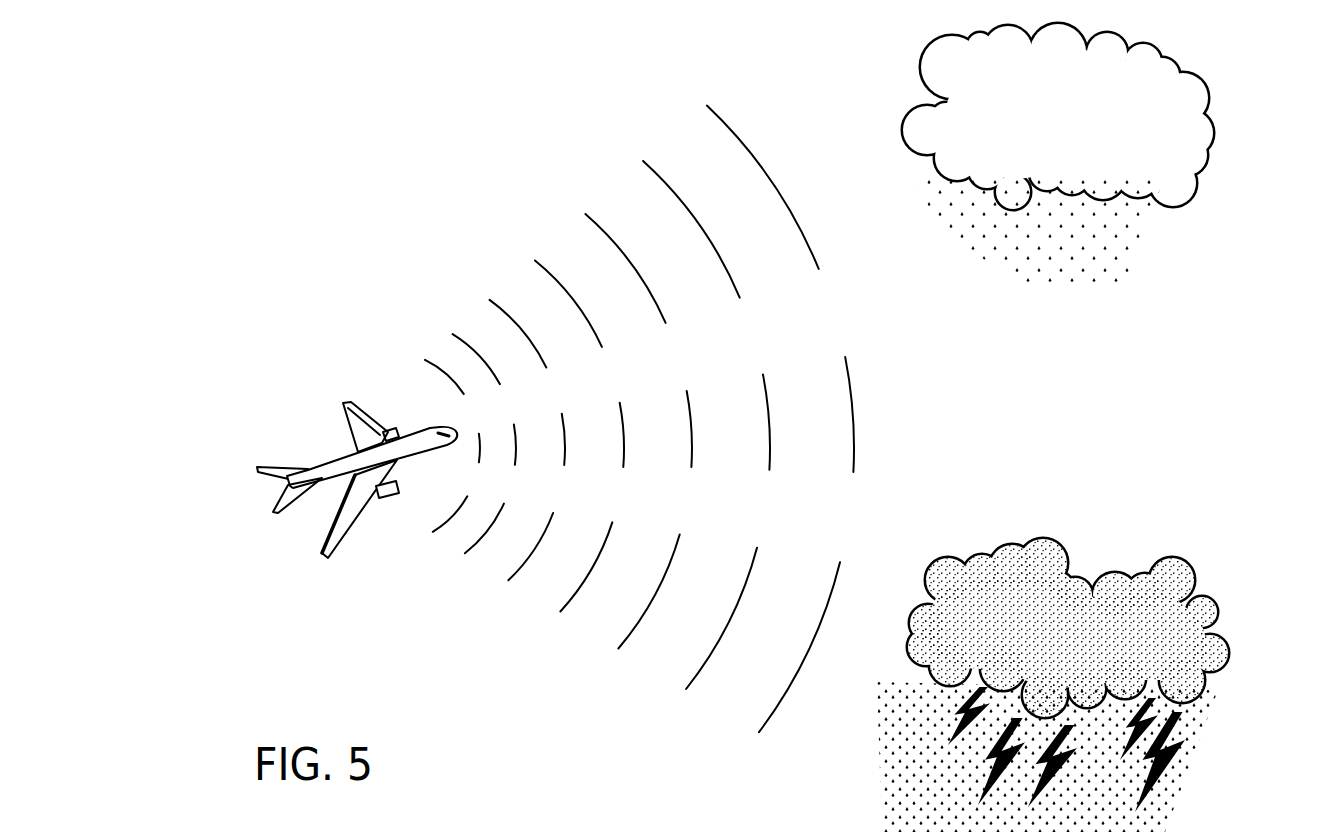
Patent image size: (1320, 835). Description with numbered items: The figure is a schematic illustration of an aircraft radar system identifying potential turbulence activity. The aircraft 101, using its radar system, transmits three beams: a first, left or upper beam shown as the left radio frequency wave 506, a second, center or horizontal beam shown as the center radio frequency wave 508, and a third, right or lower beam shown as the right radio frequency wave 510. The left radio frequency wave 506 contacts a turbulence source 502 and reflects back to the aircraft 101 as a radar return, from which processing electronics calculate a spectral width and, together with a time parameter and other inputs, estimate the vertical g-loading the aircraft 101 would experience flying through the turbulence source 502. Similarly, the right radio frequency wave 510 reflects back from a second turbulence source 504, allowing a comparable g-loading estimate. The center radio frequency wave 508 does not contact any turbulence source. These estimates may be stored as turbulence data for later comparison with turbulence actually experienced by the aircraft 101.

The aircraft 101 is at (333, 449).
The turbulence source 502 is at (1167, 85).
The turbulence source 504 is at (1195, 610).
The left radio frequency wave 506 is at (770, 183).
The center radio frequency wave 508 is at (854, 409).
The right radio frequency wave 510 is at (802, 671).